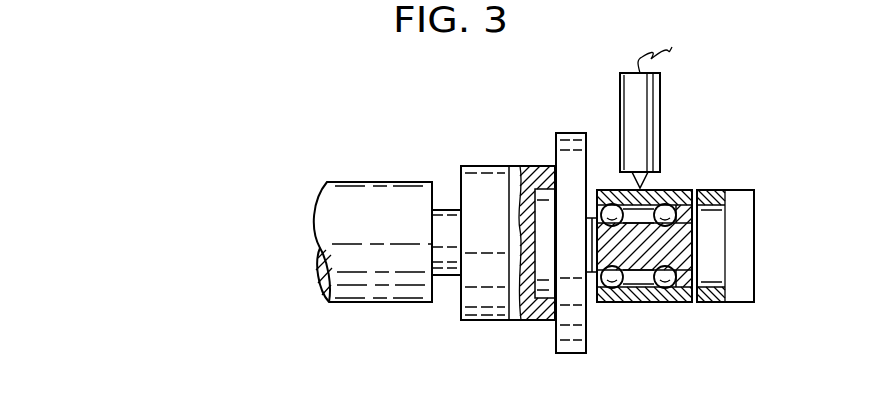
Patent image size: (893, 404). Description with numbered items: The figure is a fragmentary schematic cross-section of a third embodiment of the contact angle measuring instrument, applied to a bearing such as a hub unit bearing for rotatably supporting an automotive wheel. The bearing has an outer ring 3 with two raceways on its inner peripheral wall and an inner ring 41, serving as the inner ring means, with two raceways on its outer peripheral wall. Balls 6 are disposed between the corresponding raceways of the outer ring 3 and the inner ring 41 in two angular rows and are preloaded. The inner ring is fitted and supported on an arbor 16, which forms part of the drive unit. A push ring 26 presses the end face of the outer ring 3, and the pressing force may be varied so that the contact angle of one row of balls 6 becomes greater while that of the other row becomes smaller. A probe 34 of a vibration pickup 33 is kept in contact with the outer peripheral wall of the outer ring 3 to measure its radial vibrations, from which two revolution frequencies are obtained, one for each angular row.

The outer ring 3 is at (635, 254).
The balls 6 is at (668, 203).
The arbor 16 is at (487, 320).
The push ring 26 is at (710, 302).
The vibration pickup 33 is at (660, 97).
The probe 34 is at (648, 180).
The inner ring 41 is at (640, 300).